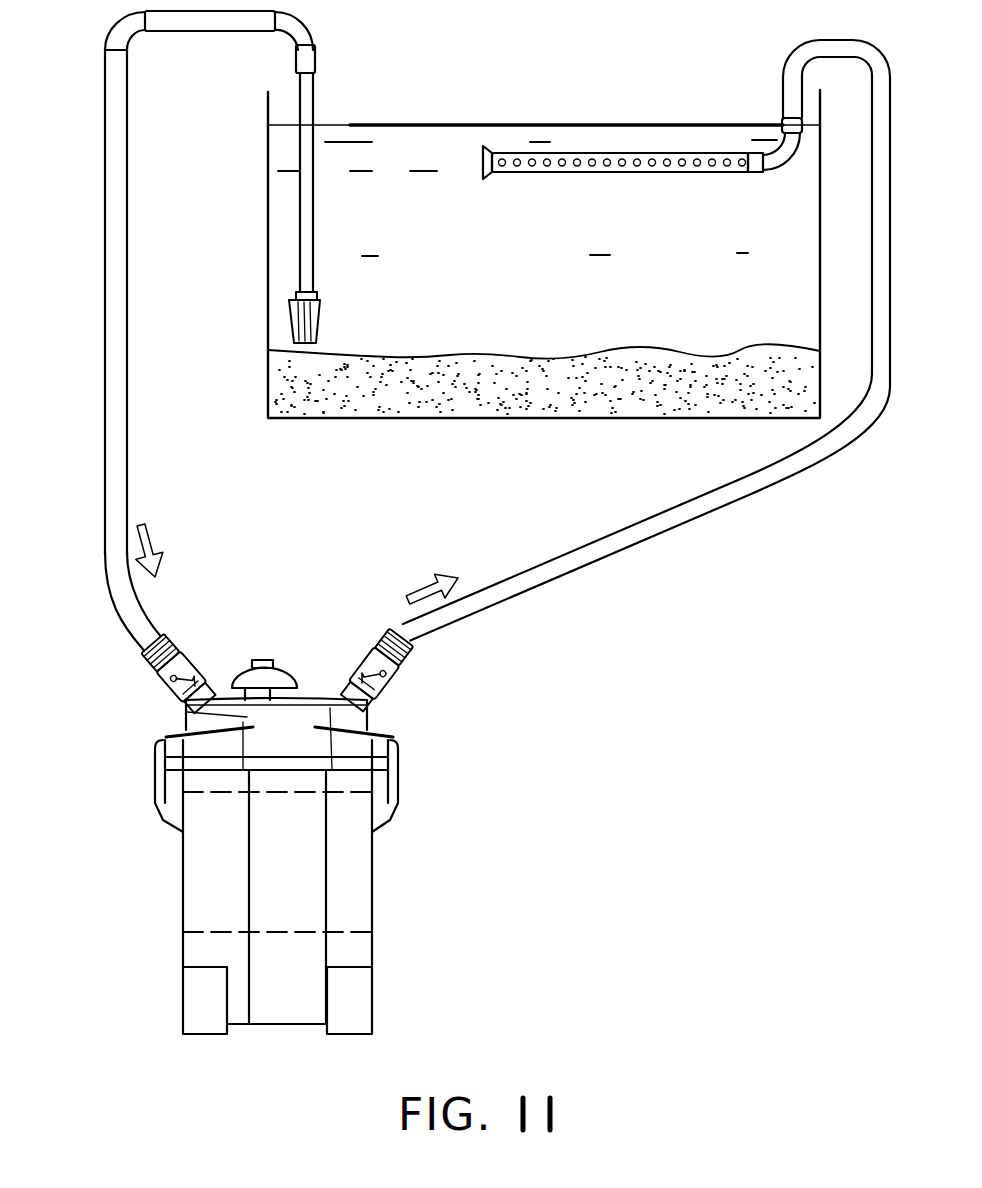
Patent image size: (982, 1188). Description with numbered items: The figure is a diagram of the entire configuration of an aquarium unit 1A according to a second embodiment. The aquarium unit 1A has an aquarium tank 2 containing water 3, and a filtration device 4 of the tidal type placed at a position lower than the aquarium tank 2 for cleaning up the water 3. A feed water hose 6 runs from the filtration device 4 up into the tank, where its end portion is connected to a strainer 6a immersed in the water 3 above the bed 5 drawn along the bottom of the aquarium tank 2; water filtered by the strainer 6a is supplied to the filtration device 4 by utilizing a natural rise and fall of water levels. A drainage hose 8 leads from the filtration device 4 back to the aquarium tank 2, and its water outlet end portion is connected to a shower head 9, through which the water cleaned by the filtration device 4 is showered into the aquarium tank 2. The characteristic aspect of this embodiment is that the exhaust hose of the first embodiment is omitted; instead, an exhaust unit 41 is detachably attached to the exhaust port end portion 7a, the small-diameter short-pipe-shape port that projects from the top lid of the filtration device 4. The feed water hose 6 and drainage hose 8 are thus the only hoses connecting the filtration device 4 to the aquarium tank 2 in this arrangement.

The aquarium unit 1A is at (586, 31).
The aquarium tank 2 is at (820, 262).
The water 3 is at (451, 125).
The filtration device 4 is at (365, 888).
The gravel bed 5 is at (730, 352).
The feed water hose 6 is at (105, 312).
The strainer 6a is at (318, 325).
The exhaust port end portion 7a is at (187, 712).
The drainage hose 8 is at (733, 497).
The shower head 9 is at (650, 153).
The exhaust unit 41 is at (278, 672).